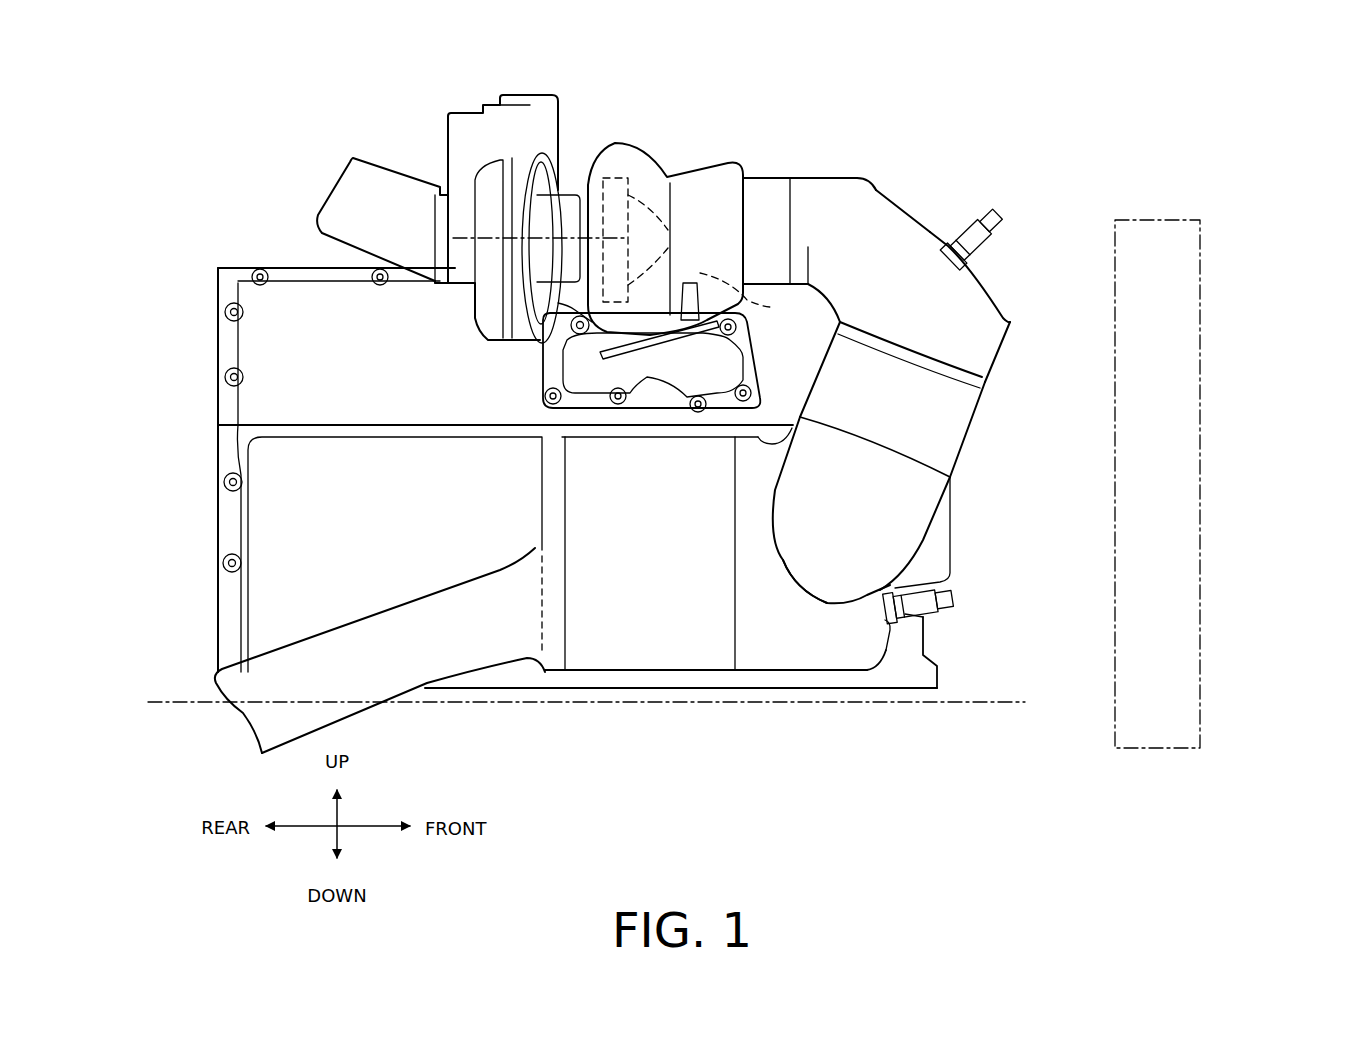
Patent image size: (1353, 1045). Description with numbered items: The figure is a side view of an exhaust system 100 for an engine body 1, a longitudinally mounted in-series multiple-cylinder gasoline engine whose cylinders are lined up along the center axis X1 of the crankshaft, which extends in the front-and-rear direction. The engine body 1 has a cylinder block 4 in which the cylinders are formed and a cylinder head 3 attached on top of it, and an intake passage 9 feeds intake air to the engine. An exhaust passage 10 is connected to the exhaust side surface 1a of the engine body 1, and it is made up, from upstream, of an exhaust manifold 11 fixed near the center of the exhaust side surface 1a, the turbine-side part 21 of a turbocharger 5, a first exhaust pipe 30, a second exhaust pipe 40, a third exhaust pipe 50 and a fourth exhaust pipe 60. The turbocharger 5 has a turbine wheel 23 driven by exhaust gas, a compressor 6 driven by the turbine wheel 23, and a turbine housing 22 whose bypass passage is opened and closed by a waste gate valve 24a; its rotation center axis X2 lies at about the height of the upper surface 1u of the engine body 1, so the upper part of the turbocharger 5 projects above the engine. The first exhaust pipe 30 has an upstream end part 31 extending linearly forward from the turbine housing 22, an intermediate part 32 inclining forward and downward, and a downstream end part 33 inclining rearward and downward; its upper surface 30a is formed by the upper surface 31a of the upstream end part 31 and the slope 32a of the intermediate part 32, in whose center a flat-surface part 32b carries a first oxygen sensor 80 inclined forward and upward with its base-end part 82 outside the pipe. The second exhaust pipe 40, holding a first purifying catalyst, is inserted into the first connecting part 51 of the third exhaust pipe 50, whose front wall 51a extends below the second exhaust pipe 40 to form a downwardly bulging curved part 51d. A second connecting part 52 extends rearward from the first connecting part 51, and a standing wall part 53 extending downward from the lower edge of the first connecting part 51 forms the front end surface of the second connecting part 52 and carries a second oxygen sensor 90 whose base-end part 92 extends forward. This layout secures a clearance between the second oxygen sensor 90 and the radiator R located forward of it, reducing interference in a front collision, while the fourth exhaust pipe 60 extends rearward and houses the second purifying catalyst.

The engine body 1 is at (532, 488).
The upper surface of the engine body 1u is at (292, 268).
The exhaust side surface 1a is at (310, 375).
The cylinder head 3 is at (250, 347).
The cylinder block 4 is at (262, 518).
The turbocharger 5 is at (595, 186).
The compressor 6 is at (495, 128).
The intake passage 9 is at (368, 178).
The exhaust passage 10 is at (503, 712).
The exhaust manifold 11 is at (717, 350).
The turbine-side part of the turbocharger 21 is at (827, 415).
The turbine housing 22 is at (638, 165).
The turbine wheel 23 is at (613, 178).
The waste gate valve 24a is at (710, 316).
The first exhaust pipe 30 is at (927, 425).
The upper surface of the first exhaust pipe 30a is at (850, 179).
The upstream end part 31 is at (803, 190).
The upper surface of the upstream end part 31a is at (827, 177).
The intermediate part 32 is at (944, 254).
The slope 32a is at (881, 155).
The flat-surface part 32b is at (895, 215).
The downstream end part 33 is at (985, 355).
The second exhaust pipe 40 is at (960, 425).
The third exhaust pipe 50 is at (912, 597).
The first connecting part 51 is at (926, 510).
The front wall 51a is at (938, 520).
The curved part 51d is at (953, 560).
The second connecting part 52 is at (773, 640).
The standing wall part 53 is at (895, 628).
The fourth exhaust pipe 60 is at (636, 635).
The first oxygen sensor 80 is at (1010, 226).
The base-end part 82 is at (953, 256).
The second oxygen sensor 90 is at (958, 600).
The base-end part 92 is at (930, 618).
The exhaust system 100 is at (437, 548).
The center axis of the crankshaft X1 is at (980, 705).
The rotation center axis X2 is at (567, 208).
The radiator R is at (1190, 277).